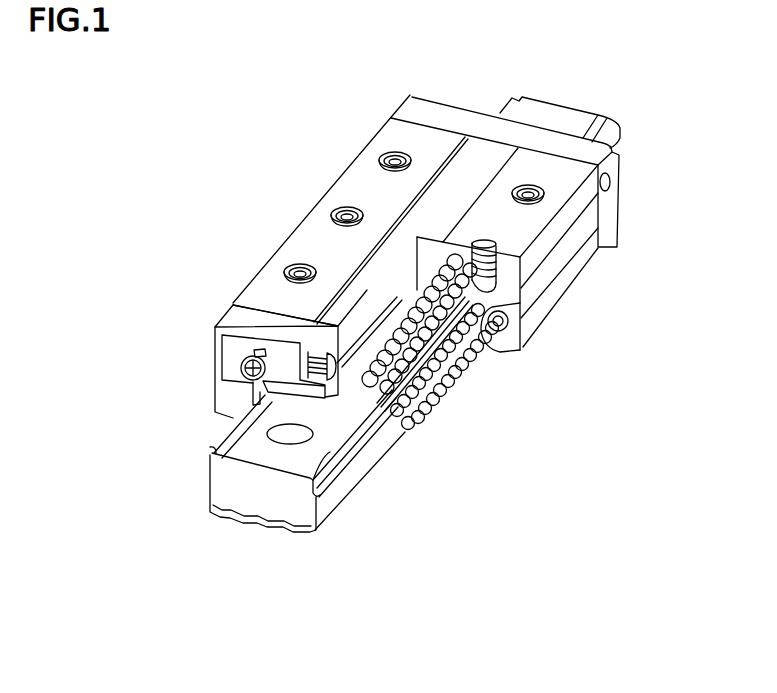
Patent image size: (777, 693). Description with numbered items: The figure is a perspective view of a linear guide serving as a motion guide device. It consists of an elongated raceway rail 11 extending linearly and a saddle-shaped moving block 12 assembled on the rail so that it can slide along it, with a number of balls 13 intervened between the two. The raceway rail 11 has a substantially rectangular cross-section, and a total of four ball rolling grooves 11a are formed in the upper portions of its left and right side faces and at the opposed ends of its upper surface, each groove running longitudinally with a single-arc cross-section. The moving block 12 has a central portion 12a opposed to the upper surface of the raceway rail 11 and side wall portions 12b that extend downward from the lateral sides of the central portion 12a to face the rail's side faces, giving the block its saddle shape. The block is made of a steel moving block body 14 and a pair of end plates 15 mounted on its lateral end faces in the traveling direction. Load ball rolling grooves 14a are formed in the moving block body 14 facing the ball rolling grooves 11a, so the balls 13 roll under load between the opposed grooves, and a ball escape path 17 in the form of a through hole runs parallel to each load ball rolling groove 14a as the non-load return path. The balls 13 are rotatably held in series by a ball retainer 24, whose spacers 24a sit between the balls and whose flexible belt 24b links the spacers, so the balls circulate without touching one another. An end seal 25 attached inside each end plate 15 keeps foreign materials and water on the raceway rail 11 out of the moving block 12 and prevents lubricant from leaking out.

The raceway rail 11 is at (255, 481).
The ball rolling groove 11a is at (207, 474).
The moving block 12 is at (433, 211).
The central portion 12a is at (472, 163).
The side wall portion 12b is at (307, 243).
The ball 13 is at (383, 427).
The moving block body 14 is at (524, 313).
The load ball rolling groove 14a is at (516, 303).
The end plate 15 is at (261, 317).
The ball escape path 17 is at (462, 262).
The ball retainer 24 is at (467, 376).
The spacer 24a is at (447, 407).
The flexible belt 24b is at (407, 427).
The end seal 25 is at (258, 403).